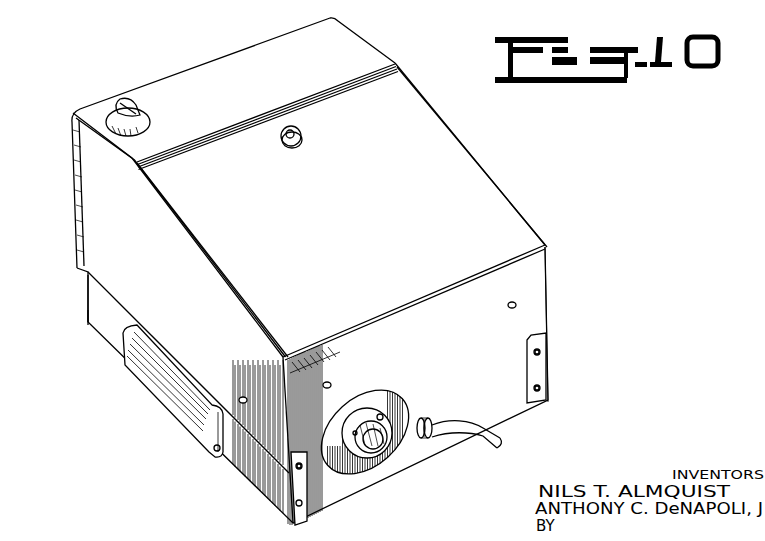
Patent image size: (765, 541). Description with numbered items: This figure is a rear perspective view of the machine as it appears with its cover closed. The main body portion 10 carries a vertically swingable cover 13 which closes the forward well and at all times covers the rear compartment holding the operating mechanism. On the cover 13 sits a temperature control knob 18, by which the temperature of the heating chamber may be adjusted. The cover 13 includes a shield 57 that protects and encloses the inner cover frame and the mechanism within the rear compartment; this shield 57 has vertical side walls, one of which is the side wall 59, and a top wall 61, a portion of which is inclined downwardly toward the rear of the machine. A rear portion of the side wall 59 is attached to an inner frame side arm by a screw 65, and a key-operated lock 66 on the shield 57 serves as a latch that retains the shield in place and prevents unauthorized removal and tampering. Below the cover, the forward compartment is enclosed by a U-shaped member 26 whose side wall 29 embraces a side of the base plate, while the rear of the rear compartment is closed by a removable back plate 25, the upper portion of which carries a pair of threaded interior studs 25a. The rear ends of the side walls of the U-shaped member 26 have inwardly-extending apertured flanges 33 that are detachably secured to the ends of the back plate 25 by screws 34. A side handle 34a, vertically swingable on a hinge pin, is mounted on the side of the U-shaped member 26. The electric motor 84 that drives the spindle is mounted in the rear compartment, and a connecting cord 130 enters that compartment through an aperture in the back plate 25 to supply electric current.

The main body portion 10 is at (103, 343).
The cover 13 is at (251, 42).
The temperature control knob 18 is at (130, 108).
The back plate 25 is at (534, 319).
The threaded interior studs 25a is at (332, 385).
The U-shaped member 26 is at (84, 294).
The side wall 29 is at (92, 316).
The apertured flanges 33 is at (310, 482).
The screws 34 is at (297, 468).
The side handles 34a is at (239, 401).
The shield 57 is at (455, 132).
The side wall 59 is at (93, 230).
The top wall 61 is at (483, 170).
The screw 65 is at (213, 418).
The key-operated lock 66 is at (303, 141).
The electric motor 84 is at (401, 424).
The connecting cord 130 is at (505, 440).